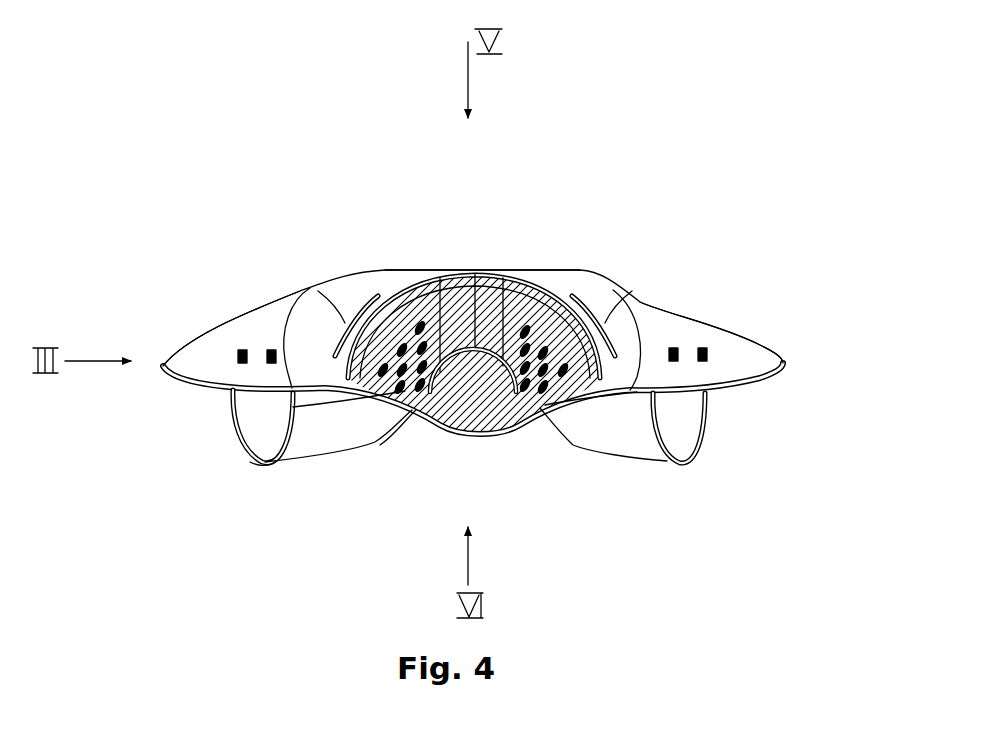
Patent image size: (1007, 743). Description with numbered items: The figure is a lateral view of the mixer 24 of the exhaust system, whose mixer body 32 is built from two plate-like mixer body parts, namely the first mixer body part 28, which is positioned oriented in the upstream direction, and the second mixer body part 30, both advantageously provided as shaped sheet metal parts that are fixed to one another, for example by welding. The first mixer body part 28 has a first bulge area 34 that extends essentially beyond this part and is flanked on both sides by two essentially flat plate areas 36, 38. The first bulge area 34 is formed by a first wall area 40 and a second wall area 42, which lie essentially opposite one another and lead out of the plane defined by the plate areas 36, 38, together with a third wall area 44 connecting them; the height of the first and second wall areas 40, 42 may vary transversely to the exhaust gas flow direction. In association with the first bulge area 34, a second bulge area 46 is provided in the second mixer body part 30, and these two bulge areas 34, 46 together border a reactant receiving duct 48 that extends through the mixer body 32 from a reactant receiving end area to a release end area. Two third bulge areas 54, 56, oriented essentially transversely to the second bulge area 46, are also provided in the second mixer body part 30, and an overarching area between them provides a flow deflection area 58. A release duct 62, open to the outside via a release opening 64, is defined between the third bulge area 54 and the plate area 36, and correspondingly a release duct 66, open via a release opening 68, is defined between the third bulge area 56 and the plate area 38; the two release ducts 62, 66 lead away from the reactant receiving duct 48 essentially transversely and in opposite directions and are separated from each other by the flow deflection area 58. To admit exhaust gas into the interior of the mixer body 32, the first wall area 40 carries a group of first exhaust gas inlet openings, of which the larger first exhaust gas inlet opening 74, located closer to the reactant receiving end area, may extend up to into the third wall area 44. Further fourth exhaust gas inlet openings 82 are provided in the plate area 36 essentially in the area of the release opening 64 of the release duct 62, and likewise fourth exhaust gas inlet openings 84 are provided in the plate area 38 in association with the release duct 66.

The mixer 24 is at (670, 164).
The first mixer body part 28 is at (615, 276).
The second mixer body part 30 is at (398, 435).
The mixer body 32 is at (360, 256).
The first bulge area 34 is at (472, 270).
The plate area 36 is at (203, 348).
The plate area 38 is at (736, 352).
The first wall area 40 is at (313, 287).
The second wall area 42 is at (622, 318).
The third wall area 44 is at (437, 272).
The second bulge area 46 is at (486, 440).
The reactant receiving duct 48 is at (514, 436).
The third bulge area 54 is at (326, 463).
The third bulge area 56 is at (663, 465).
The flow deflection area 58 is at (503, 292).
The release duct 62 is at (265, 432).
The release opening 64 is at (272, 449).
The release duct 66 is at (692, 405).
The release opening 68 is at (690, 442).
The first exhaust gas inlet opening 74 is at (260, 419).
The fourth exhaust gas inlet openings 82 is at (242, 346).
The fourth exhaust gas inlet openings 84 is at (702, 348).